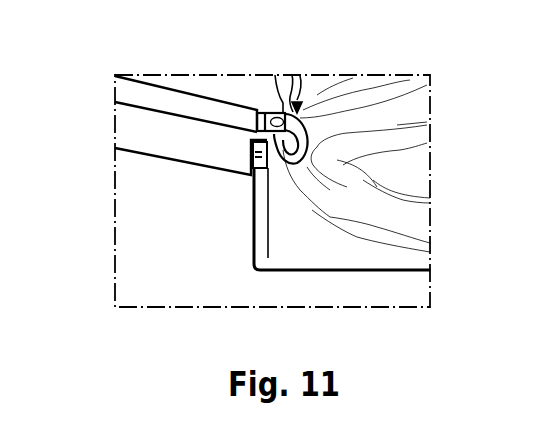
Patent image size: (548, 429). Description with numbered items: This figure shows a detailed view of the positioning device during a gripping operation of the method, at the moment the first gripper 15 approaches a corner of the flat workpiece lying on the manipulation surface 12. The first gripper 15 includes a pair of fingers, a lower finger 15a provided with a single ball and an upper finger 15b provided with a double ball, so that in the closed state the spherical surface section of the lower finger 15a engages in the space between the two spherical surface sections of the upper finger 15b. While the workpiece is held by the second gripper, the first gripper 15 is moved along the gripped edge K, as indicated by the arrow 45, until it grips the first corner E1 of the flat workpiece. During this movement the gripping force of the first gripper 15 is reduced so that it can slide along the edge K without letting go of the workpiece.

The manipulation surface 12 is at (147, 241).
The first gripper 15 is at (153, 118).
The lower finger 15a is at (254, 172).
The upper finger 15b is at (283, 113).
The arrow 45 is at (310, 88).
The grippable edge K is at (257, 223).
The first corner E1 is at (268, 258).